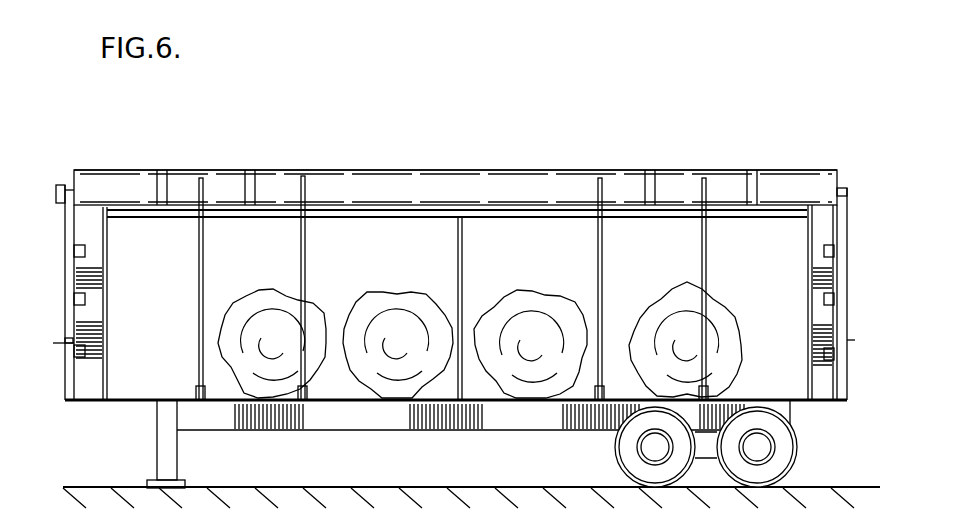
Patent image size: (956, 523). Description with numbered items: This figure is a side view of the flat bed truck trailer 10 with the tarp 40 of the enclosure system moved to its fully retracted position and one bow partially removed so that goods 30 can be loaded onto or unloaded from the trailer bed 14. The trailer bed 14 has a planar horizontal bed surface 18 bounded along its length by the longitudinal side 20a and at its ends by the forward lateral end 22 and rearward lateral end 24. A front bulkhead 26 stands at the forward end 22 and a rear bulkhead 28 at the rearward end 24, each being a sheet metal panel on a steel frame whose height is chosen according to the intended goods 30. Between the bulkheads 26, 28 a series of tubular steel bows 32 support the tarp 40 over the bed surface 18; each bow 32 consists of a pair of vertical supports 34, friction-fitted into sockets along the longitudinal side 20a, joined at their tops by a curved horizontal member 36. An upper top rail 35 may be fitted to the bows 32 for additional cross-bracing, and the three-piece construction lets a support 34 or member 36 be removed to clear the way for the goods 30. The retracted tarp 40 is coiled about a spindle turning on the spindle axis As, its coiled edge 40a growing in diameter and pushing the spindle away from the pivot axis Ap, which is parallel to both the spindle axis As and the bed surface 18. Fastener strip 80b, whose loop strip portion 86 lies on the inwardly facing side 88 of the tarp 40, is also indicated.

The flat bed truck trailer 10 is at (858, 264).
The trailer bed 14 is at (496, 407).
The bed surface 18 is at (144, 386).
The longitudinal side 20a is at (112, 401).
The forward lateral end 22 is at (70, 402).
The rearward lateral end 24 is at (838, 399).
The front bulkhead 26 is at (82, 386).
The rear bulkhead 28 is at (825, 330).
The goods 30 is at (292, 292).
The bows 32 is at (206, 264).
The vertical supports 34 is at (462, 240).
The top rail 35 is at (722, 218).
The curved horizontal member 36 is at (305, 178).
The tarp 40 is at (383, 190).
The coiled edge 40a is at (577, 166).
The fastener strip 80b is at (652, 176).
The loop strip portion 86 is at (170, 183).
The inwardly facing side 88 is at (513, 183).
The spindle axis As is at (50, 186).
The pivot axis Ap is at (873, 343).